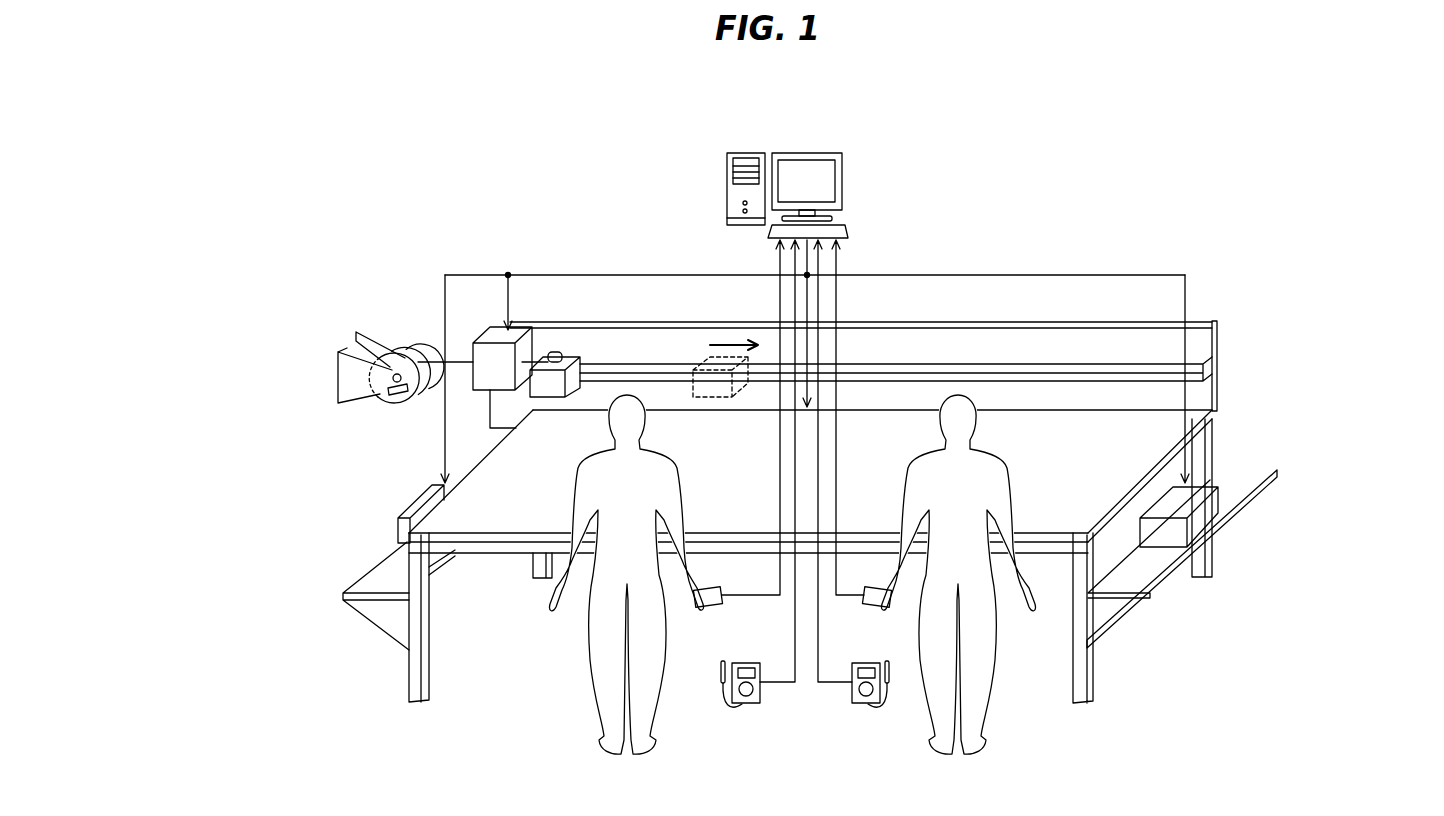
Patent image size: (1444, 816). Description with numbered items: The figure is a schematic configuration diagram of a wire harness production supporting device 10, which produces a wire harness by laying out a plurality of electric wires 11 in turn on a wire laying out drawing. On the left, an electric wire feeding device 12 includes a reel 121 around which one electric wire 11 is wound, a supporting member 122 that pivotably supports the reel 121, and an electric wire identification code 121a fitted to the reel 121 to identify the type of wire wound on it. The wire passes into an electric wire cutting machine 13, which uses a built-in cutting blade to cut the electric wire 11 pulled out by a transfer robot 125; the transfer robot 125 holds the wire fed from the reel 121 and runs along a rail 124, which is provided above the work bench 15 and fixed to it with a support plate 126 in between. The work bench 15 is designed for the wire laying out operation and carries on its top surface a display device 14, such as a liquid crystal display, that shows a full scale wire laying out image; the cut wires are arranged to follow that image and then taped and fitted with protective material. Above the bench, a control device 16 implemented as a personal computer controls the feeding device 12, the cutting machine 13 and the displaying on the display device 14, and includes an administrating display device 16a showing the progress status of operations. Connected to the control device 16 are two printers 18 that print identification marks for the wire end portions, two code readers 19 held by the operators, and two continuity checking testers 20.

The wire harness production supporting device 10 is at (479, 151).
The electric wire 11 is at (462, 358).
The electric wire feeding device 12 is at (356, 314).
The reel 121 is at (364, 342).
The electric wire identification code 121a is at (397, 396).
The supporting member 122 is at (350, 391).
The electric wire cutting machine 13 is at (500, 326).
The transfer robot 125 is at (560, 356).
The rail 124 is at (1200, 368).
The support plate 126 is at (1207, 395).
The display device 14 is at (1090, 505).
The work bench 15 is at (1213, 456).
The control device 16 is at (861, 150).
The administrating display device 16a is at (828, 183).
The printer 18 is at (425, 506).
The code reader 19 is at (712, 609).
The continuity checking tester 20 is at (750, 703).